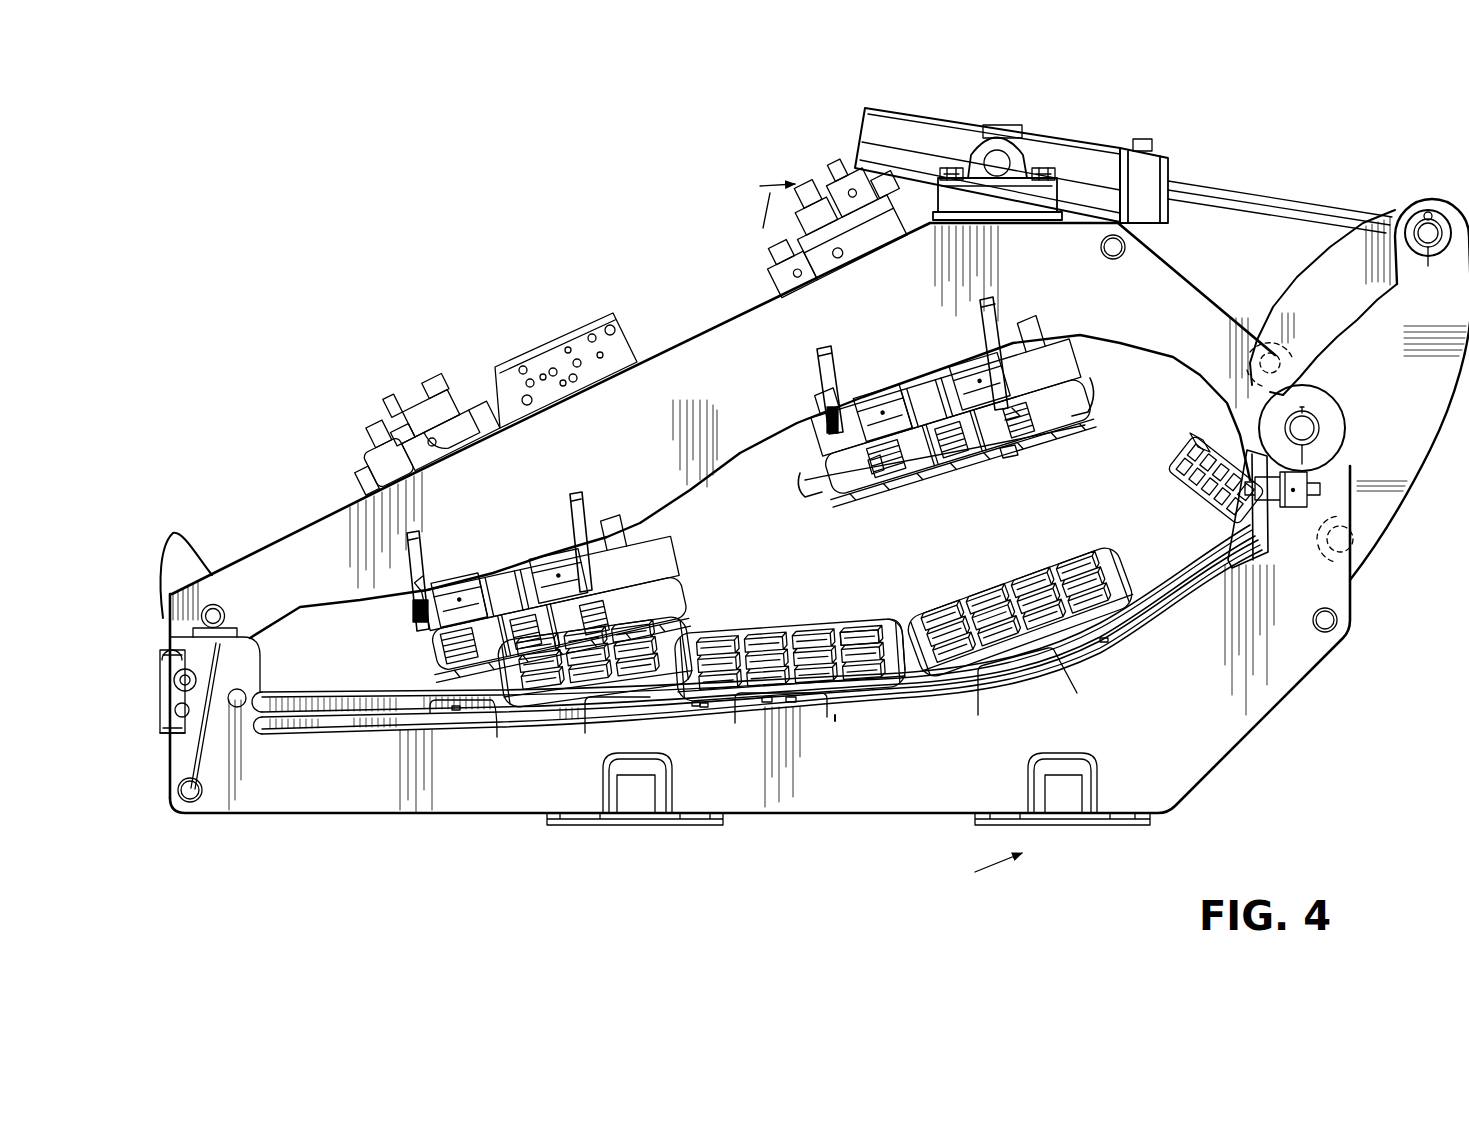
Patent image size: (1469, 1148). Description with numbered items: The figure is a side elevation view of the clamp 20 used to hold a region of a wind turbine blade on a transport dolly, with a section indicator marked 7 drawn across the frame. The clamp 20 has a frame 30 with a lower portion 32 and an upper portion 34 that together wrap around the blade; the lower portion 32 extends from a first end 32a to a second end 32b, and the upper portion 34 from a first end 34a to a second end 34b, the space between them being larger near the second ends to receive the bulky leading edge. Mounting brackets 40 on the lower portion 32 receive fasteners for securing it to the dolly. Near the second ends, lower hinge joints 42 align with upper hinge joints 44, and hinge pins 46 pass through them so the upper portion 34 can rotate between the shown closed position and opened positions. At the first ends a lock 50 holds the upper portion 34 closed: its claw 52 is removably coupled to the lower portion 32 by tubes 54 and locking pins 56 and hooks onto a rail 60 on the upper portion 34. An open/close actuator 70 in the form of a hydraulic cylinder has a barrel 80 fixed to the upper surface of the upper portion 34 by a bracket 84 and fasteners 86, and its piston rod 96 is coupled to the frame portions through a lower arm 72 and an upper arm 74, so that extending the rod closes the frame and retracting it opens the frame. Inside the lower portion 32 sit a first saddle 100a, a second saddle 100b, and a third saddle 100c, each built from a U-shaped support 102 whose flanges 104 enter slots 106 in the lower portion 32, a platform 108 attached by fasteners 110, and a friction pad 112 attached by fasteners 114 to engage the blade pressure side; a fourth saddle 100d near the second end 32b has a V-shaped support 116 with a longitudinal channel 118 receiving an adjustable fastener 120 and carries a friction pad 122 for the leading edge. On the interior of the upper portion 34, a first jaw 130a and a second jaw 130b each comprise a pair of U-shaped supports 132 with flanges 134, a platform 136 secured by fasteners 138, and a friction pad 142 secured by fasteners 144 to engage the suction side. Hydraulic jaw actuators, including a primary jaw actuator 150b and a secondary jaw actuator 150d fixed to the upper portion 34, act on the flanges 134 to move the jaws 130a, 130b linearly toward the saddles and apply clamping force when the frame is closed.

The clamp 20 is at (280, 143).
The frame 30 is at (755, 548).
The lower portion 32 is at (470, 817).
The first end of lower portion 32a is at (170, 773).
The second end of lower portion 32b is at (1352, 608).
The upper portion 34 is at (334, 512).
The first end of upper portion 34a is at (168, 625).
The second end of upper portion 34b is at (1204, 284).
The mounting brackets 40 is at (635, 827).
The lower hinge joints 42 is at (1333, 410).
The upper hinge joints 44 is at (1338, 461).
The hinge pins 46 is at (1308, 428).
The lock 50 is at (150, 603).
The claw 52 is at (172, 533).
The tubes 54 is at (180, 680).
The locking pins 56 is at (163, 735).
The rail 60 is at (222, 612).
The open/close actuator 70 is at (1153, 167).
The lower arm 72 is at (1397, 374).
The upper arm 74 is at (1313, 278).
The barrel 80 is at (905, 108).
The bracket 84 is at (1010, 141).
The fasteners 86 is at (1046, 168).
The piston rod 96 is at (1243, 190).
The first saddle 100a is at (650, 620).
The second saddle 100b is at (808, 632).
The third saddle 100c is at (1098, 568).
The fourth saddle 100d is at (1214, 490).
The U-shaped support 102 is at (791, 704).
The flanges 104 is at (735, 720).
The slots 106 is at (832, 716).
The platform 108 is at (890, 640).
The fasteners 110 is at (765, 703).
The friction pad 112 is at (827, 630).
The fasteners 114 is at (700, 707).
The V-shaped support 116 is at (1258, 547).
The longitudinal channel 118 is at (1267, 517).
The adjustable fastener 120 is at (1340, 497).
The friction pad 122 is at (1207, 448).
The first jaw 130a is at (913, 421).
The second jaw 130b is at (400, 646).
The U-shaped supports 132 is at (922, 472).
The flanges 134 is at (867, 467).
The platform 136 is at (807, 500).
The fasteners 138 is at (1017, 413).
The friction pad 142 is at (1013, 452).
The fasteners 144 is at (1063, 397).
The second primary jaw actuator 150b is at (835, 184).
The second secondary jaw actuator 150d is at (422, 403).
The section line 7 is at (876, 534).